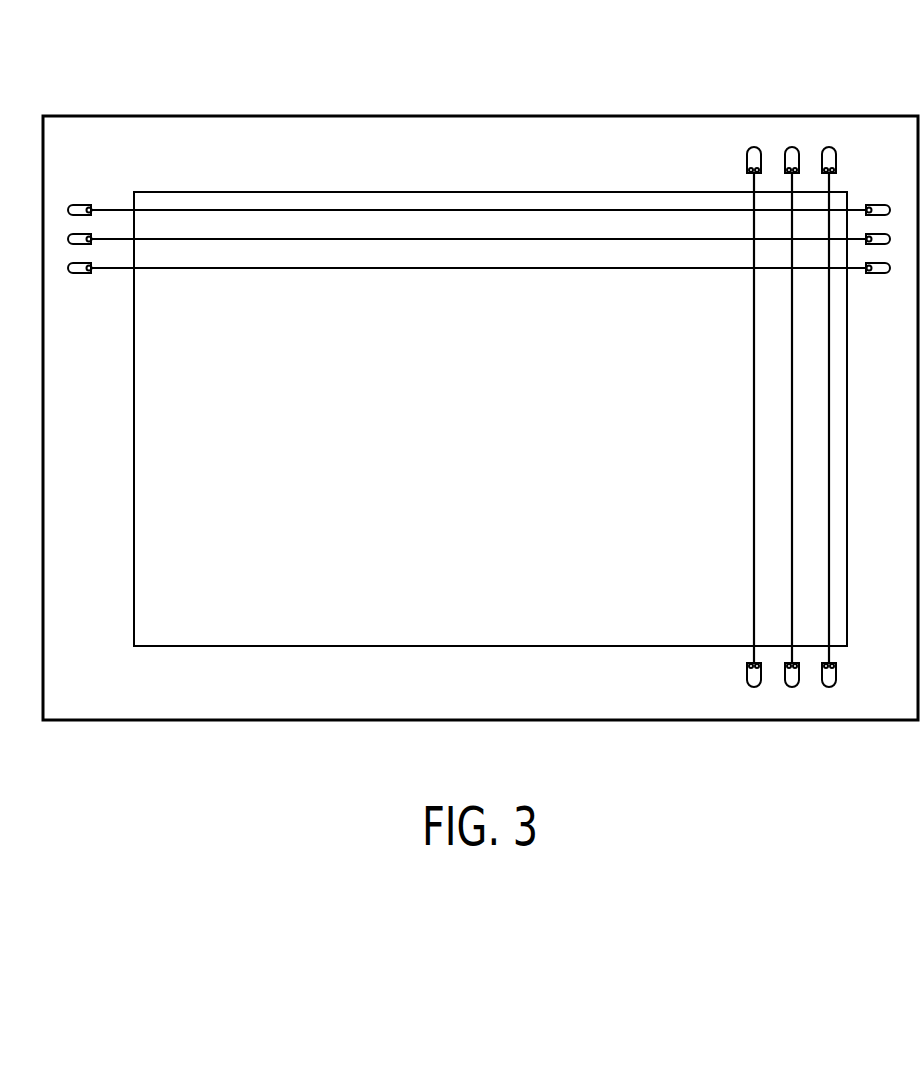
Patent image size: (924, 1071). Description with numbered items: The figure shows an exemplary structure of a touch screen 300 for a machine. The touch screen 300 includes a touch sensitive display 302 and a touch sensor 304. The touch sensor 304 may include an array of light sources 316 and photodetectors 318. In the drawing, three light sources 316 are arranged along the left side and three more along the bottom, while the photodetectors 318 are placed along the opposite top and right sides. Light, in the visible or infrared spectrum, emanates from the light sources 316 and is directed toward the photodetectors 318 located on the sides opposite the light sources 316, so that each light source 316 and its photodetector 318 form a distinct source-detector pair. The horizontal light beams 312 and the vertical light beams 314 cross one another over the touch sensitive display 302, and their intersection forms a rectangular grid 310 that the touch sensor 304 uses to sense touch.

The touch screen 300 is at (478, 116).
The touch sensitive display 302 is at (511, 191).
The touch sensor 304 is at (384, 145).
The rectangular grid 310 is at (744, 201).
The horizontal light beams 312 is at (318, 212).
The vertical light beams 314 is at (828, 537).
The light sources 316 is at (78, 203).
The photodetectors 318 is at (881, 204).